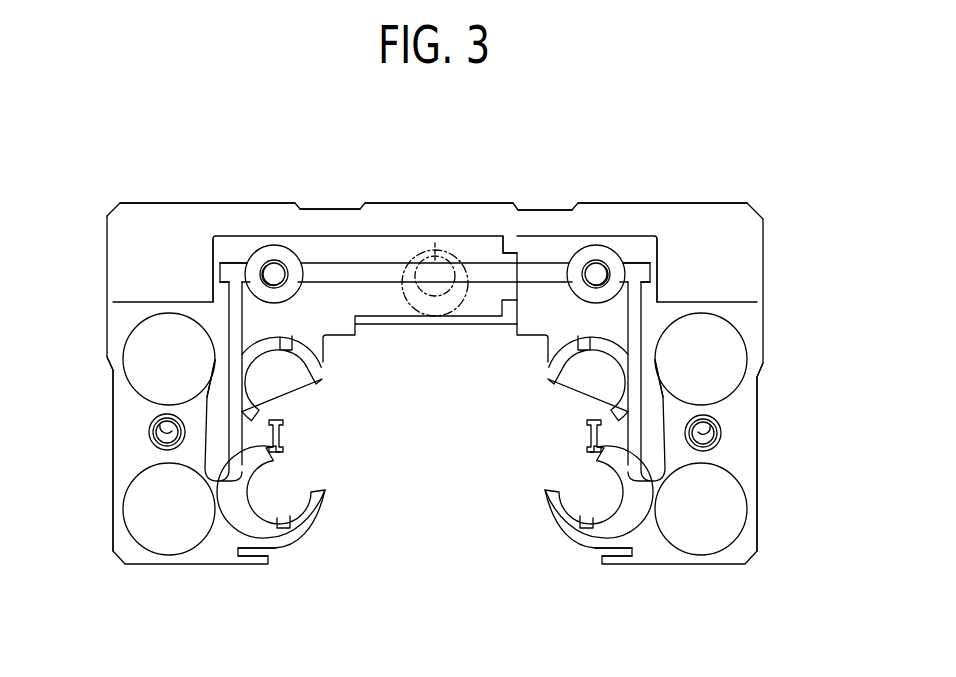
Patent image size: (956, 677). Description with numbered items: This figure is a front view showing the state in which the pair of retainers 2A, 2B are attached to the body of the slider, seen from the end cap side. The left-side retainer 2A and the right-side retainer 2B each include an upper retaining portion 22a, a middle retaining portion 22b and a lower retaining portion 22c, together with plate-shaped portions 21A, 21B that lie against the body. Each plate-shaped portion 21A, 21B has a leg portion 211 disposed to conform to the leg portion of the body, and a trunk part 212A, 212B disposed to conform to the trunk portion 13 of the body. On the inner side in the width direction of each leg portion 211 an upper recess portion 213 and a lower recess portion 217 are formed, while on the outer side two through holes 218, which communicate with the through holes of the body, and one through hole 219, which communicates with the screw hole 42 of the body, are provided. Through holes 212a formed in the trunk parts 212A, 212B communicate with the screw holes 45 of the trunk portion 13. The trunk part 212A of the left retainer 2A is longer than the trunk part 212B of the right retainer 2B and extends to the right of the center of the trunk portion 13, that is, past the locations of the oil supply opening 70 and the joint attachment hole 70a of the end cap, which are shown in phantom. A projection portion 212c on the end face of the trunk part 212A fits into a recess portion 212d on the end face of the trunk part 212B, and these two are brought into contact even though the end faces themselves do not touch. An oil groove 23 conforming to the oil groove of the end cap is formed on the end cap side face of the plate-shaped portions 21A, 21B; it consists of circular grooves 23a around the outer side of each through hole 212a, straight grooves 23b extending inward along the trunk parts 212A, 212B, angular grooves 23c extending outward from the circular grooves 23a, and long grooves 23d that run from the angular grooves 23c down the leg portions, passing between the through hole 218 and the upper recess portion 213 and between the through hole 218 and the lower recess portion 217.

The trunk portion 13 is at (424, 221).
The retainer 2A is at (296, 195).
The retainer 2B is at (625, 195).
The plate-shaped portion 21A is at (352, 235).
The plate-shaped portion 21B is at (597, 235).
The upper retaining portion 22a is at (323, 372).
The middle retaining portion 22b is at (285, 433).
The lower retaining portion 22c is at (319, 498).
The oil groove 23 is at (226, 297).
The circular groove 23a is at (267, 250).
The straight groove 23b is at (383, 272).
The angular groove 23c is at (235, 272).
The long groove 23d is at (111, 370).
The screw hole 42 is at (152, 442).
The screw hole 45 is at (254, 257).
The oil supply opening 70 is at (452, 248).
The joint attachment hole 70a is at (400, 322).
The leg portion 211 is at (125, 466).
The trunk part 212A is at (215, 279).
The trunk part 212B is at (655, 283).
The through hole 212a is at (277, 262).
The projection portion 212c is at (483, 320).
The recess portion 212d is at (485, 258).
The upper recess portion 213 is at (215, 360).
The lower recess portion 217 is at (252, 512).
The through hole 218 is at (140, 349).
The through hole 219 is at (157, 436).